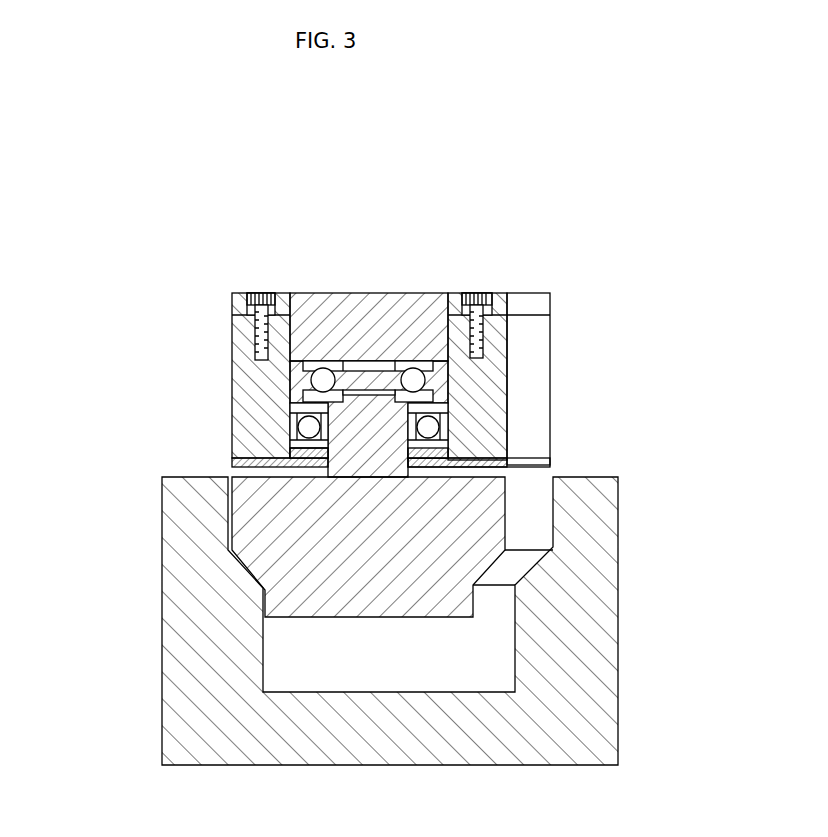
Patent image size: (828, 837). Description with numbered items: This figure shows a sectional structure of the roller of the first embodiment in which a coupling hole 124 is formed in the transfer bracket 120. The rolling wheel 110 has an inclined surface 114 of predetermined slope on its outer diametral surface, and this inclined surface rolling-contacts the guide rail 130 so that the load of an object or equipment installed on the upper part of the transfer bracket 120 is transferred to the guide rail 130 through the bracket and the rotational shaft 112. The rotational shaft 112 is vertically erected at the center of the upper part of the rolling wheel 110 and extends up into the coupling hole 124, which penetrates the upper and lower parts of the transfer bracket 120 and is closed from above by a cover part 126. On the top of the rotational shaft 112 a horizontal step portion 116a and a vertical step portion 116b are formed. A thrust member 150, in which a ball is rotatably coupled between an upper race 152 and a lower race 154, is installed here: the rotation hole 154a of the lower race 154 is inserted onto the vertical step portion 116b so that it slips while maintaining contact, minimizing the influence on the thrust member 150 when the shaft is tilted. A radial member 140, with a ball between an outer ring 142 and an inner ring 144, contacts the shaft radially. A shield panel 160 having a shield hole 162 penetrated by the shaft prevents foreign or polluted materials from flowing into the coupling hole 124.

The rolling wheel 110 is at (265, 585).
The rotational shaft 112 is at (365, 422).
The inclined surface 114 is at (305, 562).
The horizontal step portion 116a is at (382, 385).
The vertical step portion 116b is at (347, 413).
The transfer bracket 120 is at (232, 322).
The coupling hole 124 is at (304, 345).
The cover part 126 is at (329, 322).
The guide rail 130 is at (168, 512).
The radial member 140 is at (477, 407).
The outer ring 142 is at (443, 432).
The inner ring 144 is at (443, 453).
The thrust member 150 is at (380, 326).
The upper race 152 is at (331, 370).
The lower race 154 is at (315, 398).
The rotation hole 154a is at (433, 366).
The shield panel 160 is at (255, 469).
The shield hole 162 is at (295, 455).